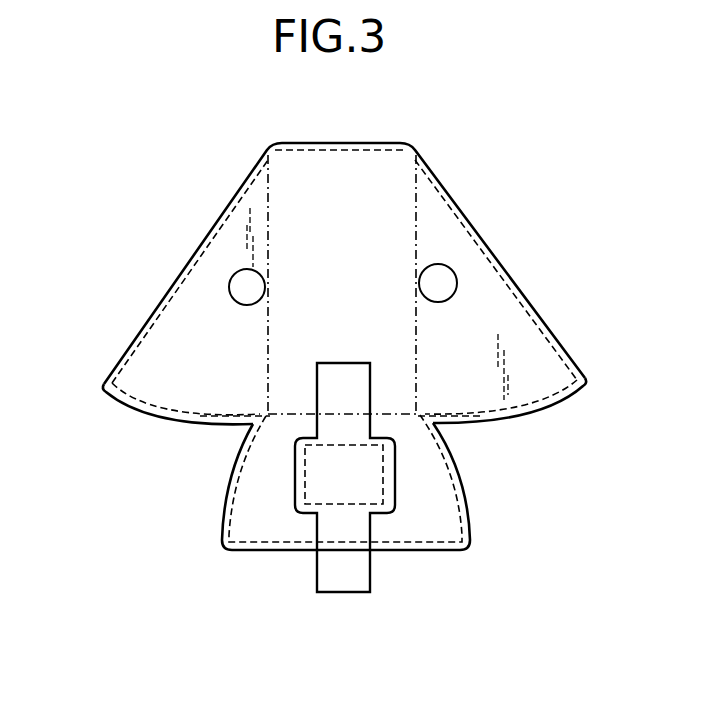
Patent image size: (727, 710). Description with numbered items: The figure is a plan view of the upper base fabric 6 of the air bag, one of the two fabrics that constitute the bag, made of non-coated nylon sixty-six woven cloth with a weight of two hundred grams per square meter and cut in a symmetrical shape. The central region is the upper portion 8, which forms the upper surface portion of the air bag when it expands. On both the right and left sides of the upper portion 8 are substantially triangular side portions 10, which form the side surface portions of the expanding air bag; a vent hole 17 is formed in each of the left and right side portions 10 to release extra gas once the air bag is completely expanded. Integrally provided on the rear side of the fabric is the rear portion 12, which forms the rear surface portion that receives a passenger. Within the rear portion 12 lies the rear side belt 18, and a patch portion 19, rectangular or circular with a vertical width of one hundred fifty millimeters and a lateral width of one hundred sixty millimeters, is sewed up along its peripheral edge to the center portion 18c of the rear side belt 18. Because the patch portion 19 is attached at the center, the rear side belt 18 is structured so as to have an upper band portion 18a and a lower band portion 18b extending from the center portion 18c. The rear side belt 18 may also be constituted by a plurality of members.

The upper base fabric 6 is at (220, 178).
The upper portion 8 is at (333, 168).
The side portion 10 is at (157, 345).
The rear portion 12 is at (268, 554).
The vent hole 17 is at (229, 287).
The rear side belt 18 is at (419, 484).
The upper band portion 18a is at (362, 575).
The lower band portion 18b is at (343, 378).
The center portion 18c is at (386, 460).
The patch portion 19 is at (385, 480).